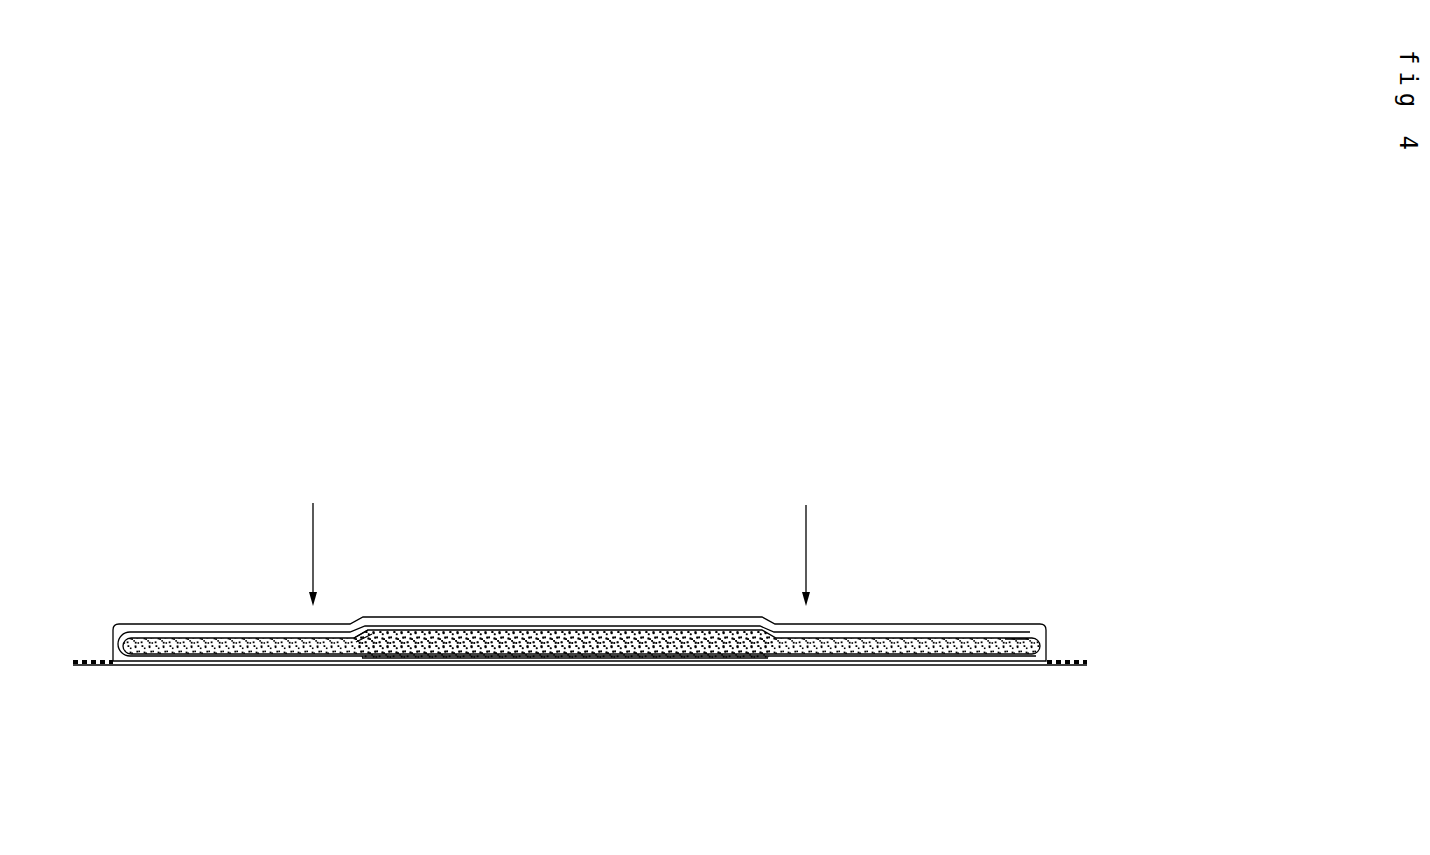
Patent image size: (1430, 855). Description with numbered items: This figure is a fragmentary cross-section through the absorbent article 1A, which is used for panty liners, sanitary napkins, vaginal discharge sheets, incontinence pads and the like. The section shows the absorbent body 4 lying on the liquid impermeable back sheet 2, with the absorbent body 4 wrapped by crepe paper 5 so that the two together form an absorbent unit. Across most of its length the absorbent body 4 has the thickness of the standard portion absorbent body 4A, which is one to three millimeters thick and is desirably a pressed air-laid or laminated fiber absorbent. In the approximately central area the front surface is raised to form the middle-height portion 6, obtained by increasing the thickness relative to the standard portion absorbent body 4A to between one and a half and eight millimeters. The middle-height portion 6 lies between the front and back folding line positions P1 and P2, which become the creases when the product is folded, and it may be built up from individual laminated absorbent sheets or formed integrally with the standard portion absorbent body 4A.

The absorbent article 1A is at (893, 617).
The liquid impermeable back sheet 2 is at (570, 666).
The absorbent body 4 is at (549, 627).
The standard portion absorbent body 4A is at (636, 645).
The crepe paper 5 is at (468, 661).
The middle-height portion 6 is at (400, 630).
The front folding line position P1 is at (309, 529).
The back folding line position P2 is at (803, 532).